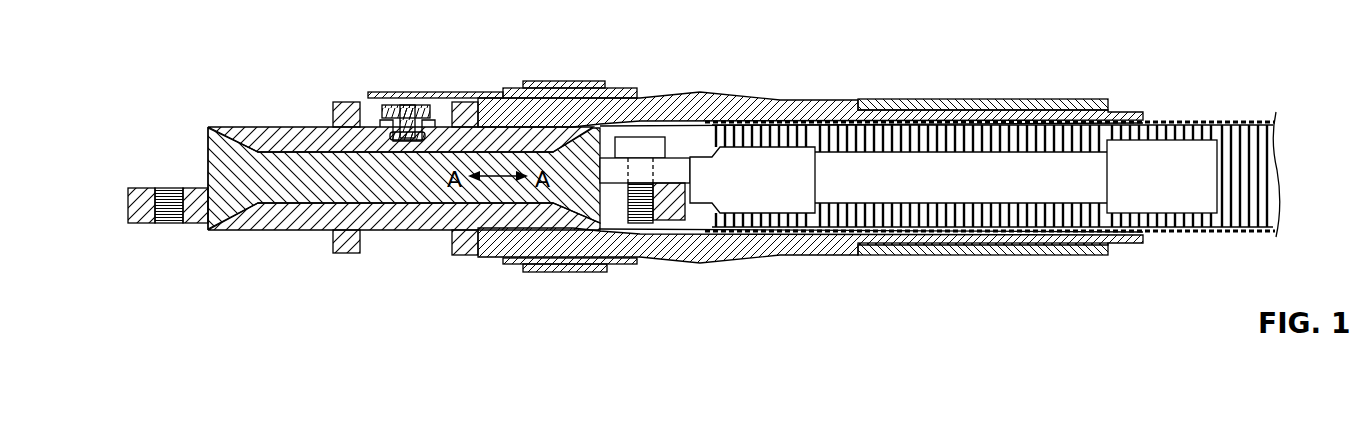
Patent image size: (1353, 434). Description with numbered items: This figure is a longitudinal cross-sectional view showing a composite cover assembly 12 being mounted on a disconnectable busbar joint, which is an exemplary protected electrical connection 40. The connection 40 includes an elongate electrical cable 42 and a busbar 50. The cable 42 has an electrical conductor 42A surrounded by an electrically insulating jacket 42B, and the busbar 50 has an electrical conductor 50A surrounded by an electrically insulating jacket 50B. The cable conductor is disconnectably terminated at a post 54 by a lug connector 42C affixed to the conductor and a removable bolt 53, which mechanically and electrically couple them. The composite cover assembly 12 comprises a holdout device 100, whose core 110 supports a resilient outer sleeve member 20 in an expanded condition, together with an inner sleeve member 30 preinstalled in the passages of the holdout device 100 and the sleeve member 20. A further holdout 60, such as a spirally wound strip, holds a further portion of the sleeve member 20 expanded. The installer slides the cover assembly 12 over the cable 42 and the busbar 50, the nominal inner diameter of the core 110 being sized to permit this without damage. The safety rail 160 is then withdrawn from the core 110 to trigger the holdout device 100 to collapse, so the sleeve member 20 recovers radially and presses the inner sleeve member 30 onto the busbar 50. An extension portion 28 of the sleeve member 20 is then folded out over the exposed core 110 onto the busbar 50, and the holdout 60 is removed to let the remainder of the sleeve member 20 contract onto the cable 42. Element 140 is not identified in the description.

The composite cover assembly 12 is at (600, 60).
The resilient outer sleeve member 20 is at (688, 92).
The extension portion 28 is at (548, 81).
The inner sleeve member 30 is at (575, 232).
The cable connection 40 is at (677, 236).
The electrical cable 42 is at (992, 212).
The electrical conductor 42A is at (845, 180).
The electrically insulating jacket 42B is at (1190, 180).
The lug connector 42C is at (772, 168).
The busbar 50 is at (274, 120).
The electrical conductor 50A is at (588, 215).
The electrically insulating jacket 50B is at (407, 214).
The removable bolt 53 is at (637, 147).
The post 54 is at (634, 224).
The further holdout 60 is at (985, 138).
The holdout device 100 is at (496, 266).
The core 110 is at (514, 265).
The upper strip 140 is at (508, 88).
The safety rail 160 is at (407, 92).